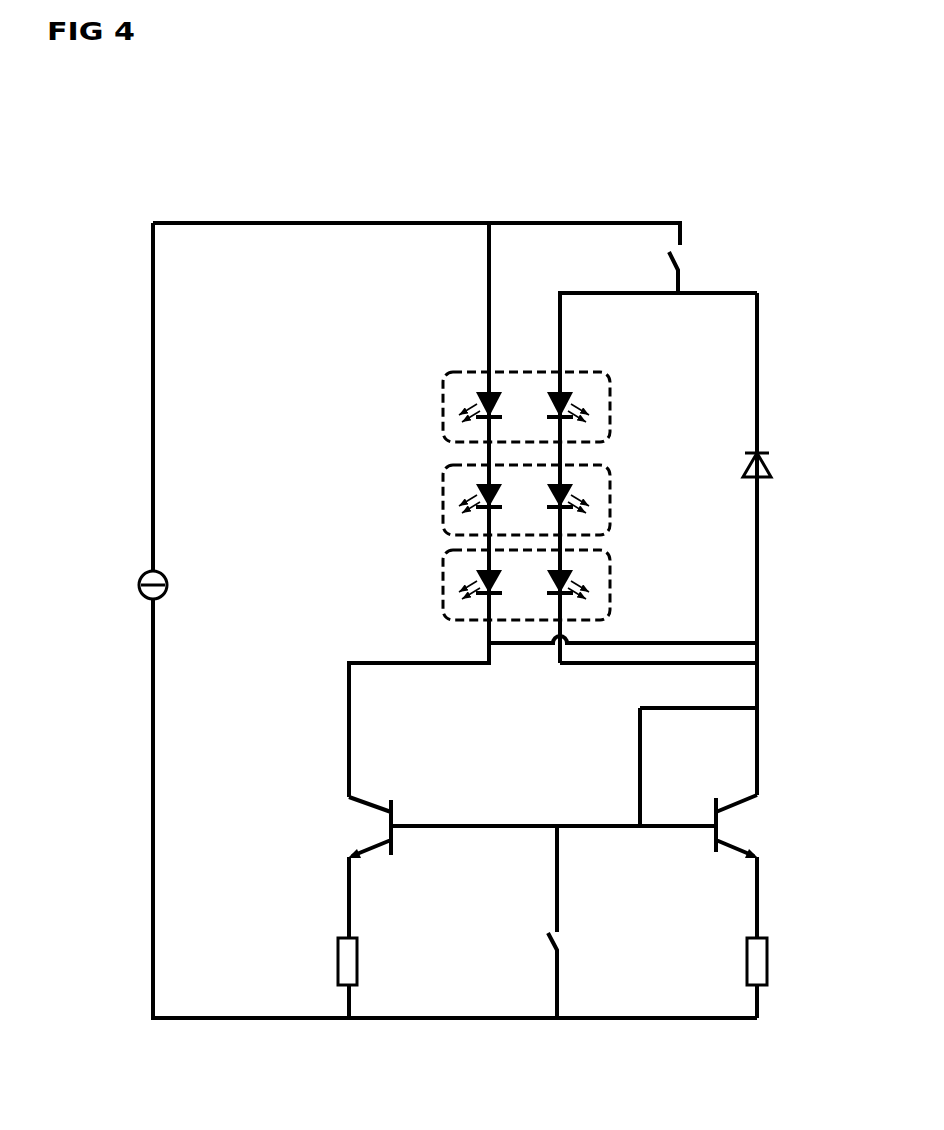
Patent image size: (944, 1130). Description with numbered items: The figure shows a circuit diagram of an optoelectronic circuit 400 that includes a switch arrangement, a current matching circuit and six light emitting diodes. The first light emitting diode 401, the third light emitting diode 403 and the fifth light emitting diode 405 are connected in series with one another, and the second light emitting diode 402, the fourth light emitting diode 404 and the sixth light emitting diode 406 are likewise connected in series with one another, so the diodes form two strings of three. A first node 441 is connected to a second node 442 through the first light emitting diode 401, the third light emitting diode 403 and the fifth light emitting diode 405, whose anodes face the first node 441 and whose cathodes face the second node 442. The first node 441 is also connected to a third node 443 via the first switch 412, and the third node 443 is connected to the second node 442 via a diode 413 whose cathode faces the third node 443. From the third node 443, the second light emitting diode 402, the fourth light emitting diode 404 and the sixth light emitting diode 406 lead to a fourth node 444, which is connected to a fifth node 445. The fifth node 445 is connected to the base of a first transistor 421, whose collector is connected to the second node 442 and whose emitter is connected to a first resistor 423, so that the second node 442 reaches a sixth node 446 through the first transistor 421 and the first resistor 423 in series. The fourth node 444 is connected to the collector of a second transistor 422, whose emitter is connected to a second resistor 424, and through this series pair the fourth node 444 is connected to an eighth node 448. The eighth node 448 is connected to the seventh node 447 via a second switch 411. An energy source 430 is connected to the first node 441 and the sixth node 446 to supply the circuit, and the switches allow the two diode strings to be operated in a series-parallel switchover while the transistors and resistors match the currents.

The optoelectronic circuit 400 is at (678, 177).
The first light emitting diode 401 is at (476, 395).
The second light emitting diode 402 is at (573, 395).
The third light emitting diode 403 is at (476, 487).
The fourth light emitting diode 404 is at (573, 487).
The fifth light emitting diode 405 is at (476, 573).
The sixth light emitting diode 406 is at (573, 573).
The second switch 411 is at (554, 940).
The first switch 412 is at (676, 258).
The diode 413 is at (765, 465).
The first transistor 421 is at (378, 802).
The second transistor 422 is at (728, 842).
The first resistor 423 is at (358, 962).
The second resistor 424 is at (768, 962).
The energy source 430 is at (167, 573).
The first node 441 is at (490, 222).
The second node 442 is at (492, 647).
The third node 443 is at (677, 296).
The fourth node 444 is at (758, 713).
The fifth node 445 is at (640, 815).
The sixth node 446 is at (349, 1020).
The seventh node 447 is at (558, 833).
The eighth node 448 is at (557, 1020).